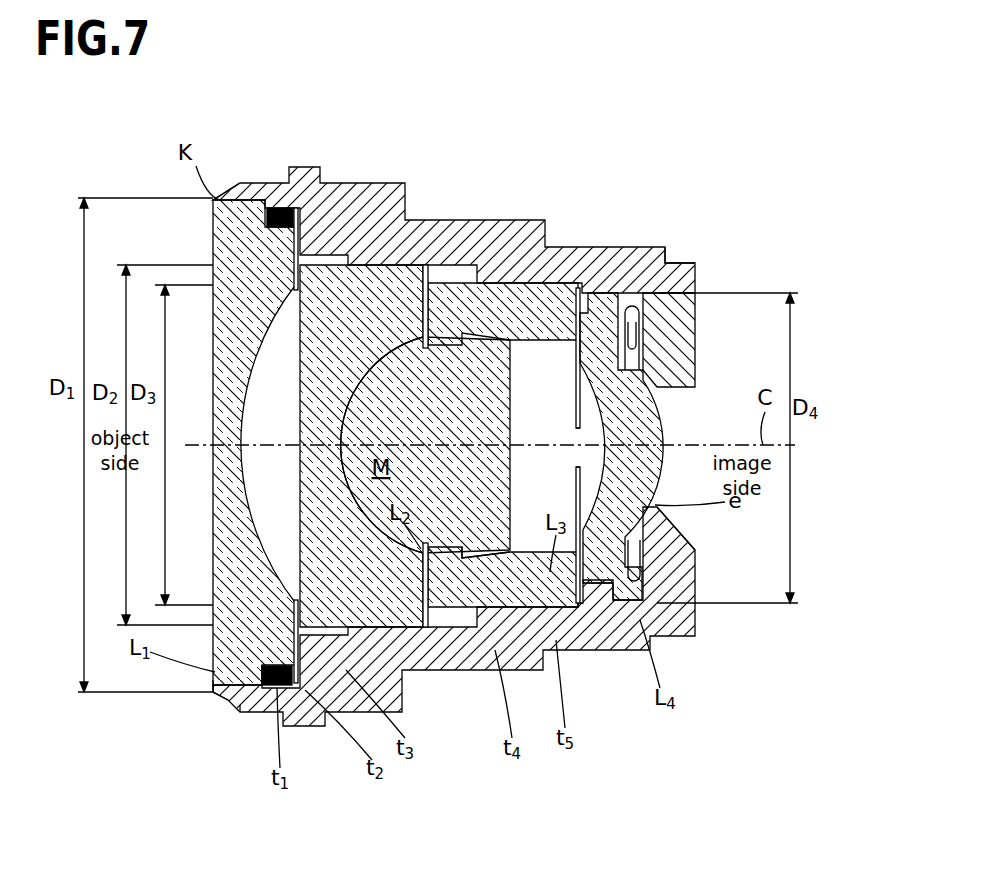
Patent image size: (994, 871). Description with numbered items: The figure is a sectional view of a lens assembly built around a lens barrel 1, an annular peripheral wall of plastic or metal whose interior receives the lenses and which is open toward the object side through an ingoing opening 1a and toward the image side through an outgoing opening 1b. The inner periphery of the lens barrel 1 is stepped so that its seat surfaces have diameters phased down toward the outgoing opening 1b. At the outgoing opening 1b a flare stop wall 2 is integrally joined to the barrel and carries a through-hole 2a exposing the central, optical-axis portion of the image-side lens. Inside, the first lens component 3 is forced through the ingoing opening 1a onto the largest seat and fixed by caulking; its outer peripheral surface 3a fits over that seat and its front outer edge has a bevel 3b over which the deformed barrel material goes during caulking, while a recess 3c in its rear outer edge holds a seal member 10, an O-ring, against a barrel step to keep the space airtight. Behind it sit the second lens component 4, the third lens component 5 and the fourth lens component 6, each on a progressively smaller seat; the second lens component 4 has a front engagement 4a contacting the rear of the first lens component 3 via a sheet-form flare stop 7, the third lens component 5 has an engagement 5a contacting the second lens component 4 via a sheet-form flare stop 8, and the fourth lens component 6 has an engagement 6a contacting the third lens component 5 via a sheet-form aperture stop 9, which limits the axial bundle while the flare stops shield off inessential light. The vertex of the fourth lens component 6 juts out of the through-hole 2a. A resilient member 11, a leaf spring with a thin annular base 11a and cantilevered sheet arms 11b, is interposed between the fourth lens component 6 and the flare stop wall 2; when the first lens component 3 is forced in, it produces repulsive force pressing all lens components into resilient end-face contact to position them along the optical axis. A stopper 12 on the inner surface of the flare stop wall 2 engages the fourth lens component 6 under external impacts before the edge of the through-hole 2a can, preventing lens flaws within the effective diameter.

The lens barrel 1 is at (598, 245).
The ingoing opening 1a is at (214, 214).
The outgoing opening 1b is at (662, 300).
The flare stop wall 2 is at (697, 590).
The through-hole 2a is at (668, 515).
The first lens component 3 is at (258, 243).
The outer peripheral surface 3a is at (237, 704).
The bevel 3b is at (215, 690).
The recess 3c is at (248, 660).
The second lens component 4 is at (392, 308).
The engagement 4a is at (292, 210).
The third lens component 5 is at (492, 328).
The engagement 5a is at (447, 660).
The fourth lens component 6 is at (608, 320).
The engagement 6a is at (583, 605).
The sheet-form flare stop 7 is at (295, 598).
The sheet-form flare stop 8 is at (432, 343).
The sheet-form aperture stop 9 is at (576, 434).
The seal member 10 is at (284, 690).
The resilient member 11 is at (641, 345).
The annular base 11a is at (641, 545).
The arms 11b is at (640, 318).
The stopper 12 is at (582, 432).